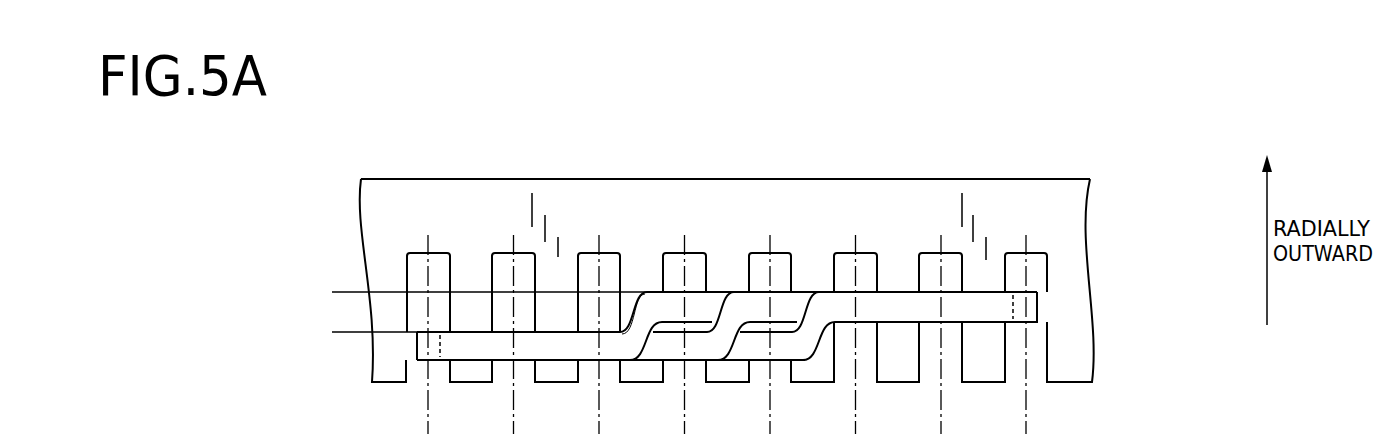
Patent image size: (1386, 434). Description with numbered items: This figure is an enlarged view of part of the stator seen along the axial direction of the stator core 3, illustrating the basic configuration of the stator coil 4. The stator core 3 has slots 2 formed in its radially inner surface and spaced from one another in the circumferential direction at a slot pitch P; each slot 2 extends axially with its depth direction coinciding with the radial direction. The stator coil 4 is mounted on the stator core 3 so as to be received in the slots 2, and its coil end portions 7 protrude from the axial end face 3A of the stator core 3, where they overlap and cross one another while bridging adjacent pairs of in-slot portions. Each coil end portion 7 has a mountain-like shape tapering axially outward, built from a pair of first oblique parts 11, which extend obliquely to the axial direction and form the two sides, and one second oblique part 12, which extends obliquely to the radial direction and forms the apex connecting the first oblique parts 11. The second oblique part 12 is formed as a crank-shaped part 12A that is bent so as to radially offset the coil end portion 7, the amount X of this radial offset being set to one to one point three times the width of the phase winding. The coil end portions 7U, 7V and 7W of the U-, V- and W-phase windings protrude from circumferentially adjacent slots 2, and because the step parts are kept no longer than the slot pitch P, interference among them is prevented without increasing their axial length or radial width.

The slot 2 is at (408, 280).
The stator core 3 is at (473, 178).
The axial end face 3A is at (1043, 220).
The stator coil 4 is at (835, 212).
The coil end portion 7 is at (586, 212).
The U-phase coil end portion 7U is at (714, 292).
The V-phase coil end portion 7V is at (803, 290).
The W-phase coil end portion 7W is at (889, 292).
The first oblique part 11 is at (567, 340).
The second oblique part 12 is at (648, 292).
The crank-shaped part 12A is at (637, 326).
The amount of radial offset X is at (340, 293).
The slot pitch P is at (502, 430).